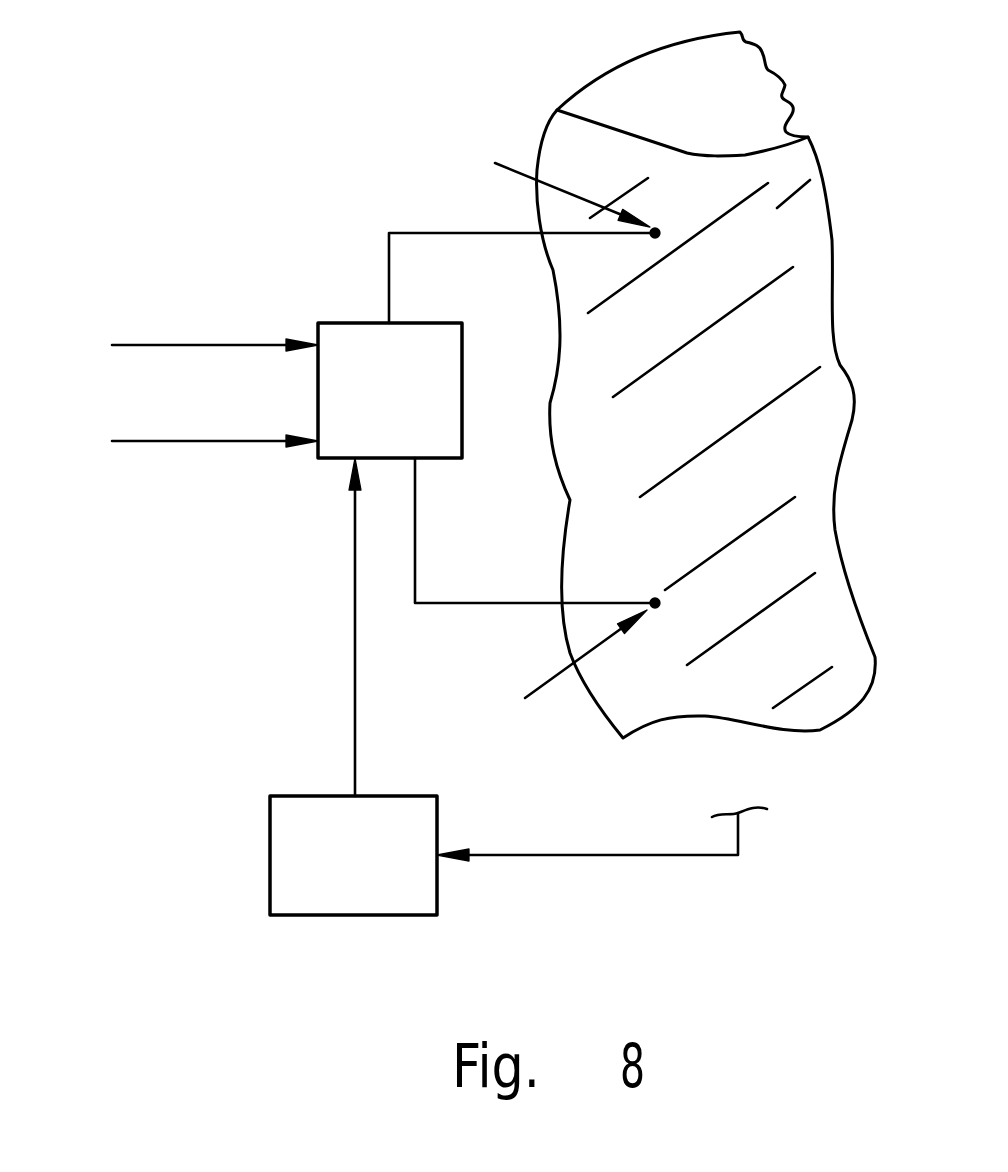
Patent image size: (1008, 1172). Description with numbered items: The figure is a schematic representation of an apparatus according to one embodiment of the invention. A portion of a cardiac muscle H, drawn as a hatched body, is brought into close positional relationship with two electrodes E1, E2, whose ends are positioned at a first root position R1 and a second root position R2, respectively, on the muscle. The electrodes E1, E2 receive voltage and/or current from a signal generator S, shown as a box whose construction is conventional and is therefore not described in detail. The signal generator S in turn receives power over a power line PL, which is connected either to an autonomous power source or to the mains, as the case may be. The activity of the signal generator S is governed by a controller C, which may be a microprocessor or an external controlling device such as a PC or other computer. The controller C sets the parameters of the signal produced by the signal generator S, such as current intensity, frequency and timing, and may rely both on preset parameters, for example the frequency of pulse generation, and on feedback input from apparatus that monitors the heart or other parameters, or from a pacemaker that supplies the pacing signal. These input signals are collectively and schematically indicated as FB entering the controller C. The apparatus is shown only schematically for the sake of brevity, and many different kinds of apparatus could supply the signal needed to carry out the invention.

The cardiac muscle portion H is at (822, 168).
The signal generator S is at (390, 390).
The controller C is at (353, 855).
The power line PL is at (135, 424).
The first electrode E1 is at (533, 235).
The second electrode E2 is at (515, 602).
The first root position R1 is at (550, 182).
The second root position R2 is at (565, 667).
The feedback input signals FB is at (602, 862).